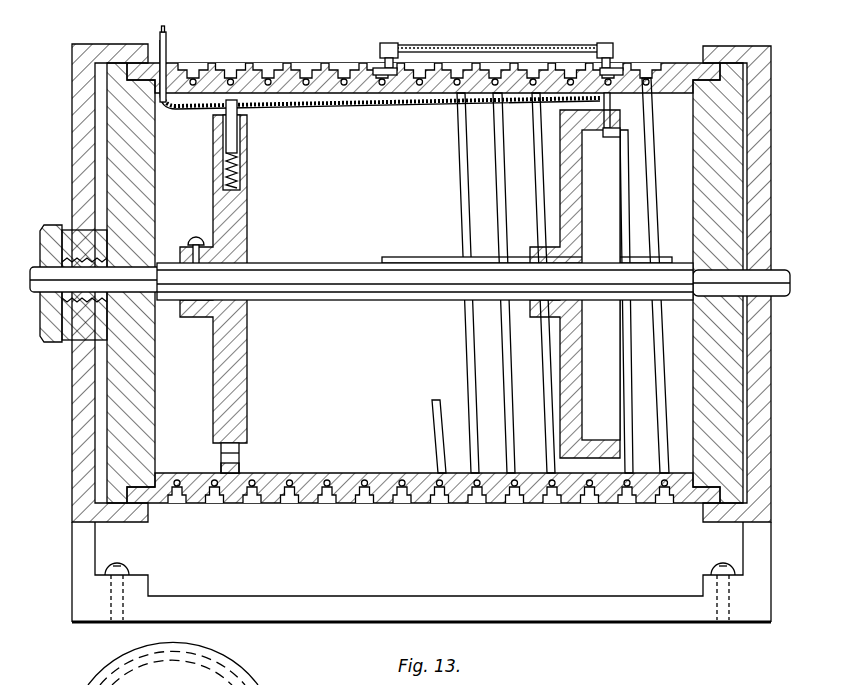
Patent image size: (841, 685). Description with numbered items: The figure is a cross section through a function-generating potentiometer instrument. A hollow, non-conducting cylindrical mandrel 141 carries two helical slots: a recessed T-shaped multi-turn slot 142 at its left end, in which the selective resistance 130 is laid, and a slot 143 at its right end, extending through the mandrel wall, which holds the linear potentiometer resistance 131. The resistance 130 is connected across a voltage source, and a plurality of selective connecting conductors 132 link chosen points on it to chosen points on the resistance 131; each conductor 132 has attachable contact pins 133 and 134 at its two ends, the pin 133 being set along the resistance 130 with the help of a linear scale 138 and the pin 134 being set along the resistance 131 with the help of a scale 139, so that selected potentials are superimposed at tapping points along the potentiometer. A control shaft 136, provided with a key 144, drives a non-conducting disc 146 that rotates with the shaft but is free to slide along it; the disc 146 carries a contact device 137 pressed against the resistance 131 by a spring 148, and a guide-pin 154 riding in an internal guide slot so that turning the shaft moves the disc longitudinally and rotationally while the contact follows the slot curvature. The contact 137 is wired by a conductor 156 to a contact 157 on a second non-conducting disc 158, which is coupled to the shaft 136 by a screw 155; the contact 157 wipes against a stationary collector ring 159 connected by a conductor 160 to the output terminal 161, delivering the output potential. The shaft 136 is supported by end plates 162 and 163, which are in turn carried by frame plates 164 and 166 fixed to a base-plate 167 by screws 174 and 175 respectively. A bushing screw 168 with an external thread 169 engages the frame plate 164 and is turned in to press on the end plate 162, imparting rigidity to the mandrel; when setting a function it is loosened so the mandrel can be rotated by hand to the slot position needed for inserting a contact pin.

The selective resistance 130 is at (330, 488).
The linear potentiometer resistance 131 is at (627, 506).
The selective connecting conductor 132 is at (520, 46).
The attachable contact pin 133 is at (380, 50).
The attachable contact pin 134 is at (614, 60).
The control shaft 136 is at (343, 249).
The contact device 137 is at (585, 128).
The linear scale 138 is at (395, 503).
The scale 139 is at (497, 505).
The cylindrical mandrel 141 is at (258, 503).
The helical recessed T multi-turn slot 142 is at (215, 503).
The helical slot 143 is at (553, 480).
The key 144 is at (440, 245).
The non-conducting disc 146 is at (576, 238).
The spring 148 is at (557, 128).
The guide-pin 154 is at (614, 134).
The screw 155 is at (195, 236).
The conductor 156 is at (355, 110).
The contact 157 is at (240, 138).
The non-conducting disc 158 is at (244, 216).
The stationary collector ring 159 is at (242, 462).
The conductor 160 is at (167, 44).
The output terminal 161 is at (166, 28).
The end plate 162 is at (150, 387).
The end plate 163 is at (692, 185).
The frame plate 164 is at (78, 146).
The frame plate 166 is at (765, 176).
The base-plate 167 is at (407, 602).
The bushing screw 168 is at (50, 345).
The external thread 169 is at (68, 345).
The screw 174 is at (128, 570).
The screw 175 is at (712, 568).